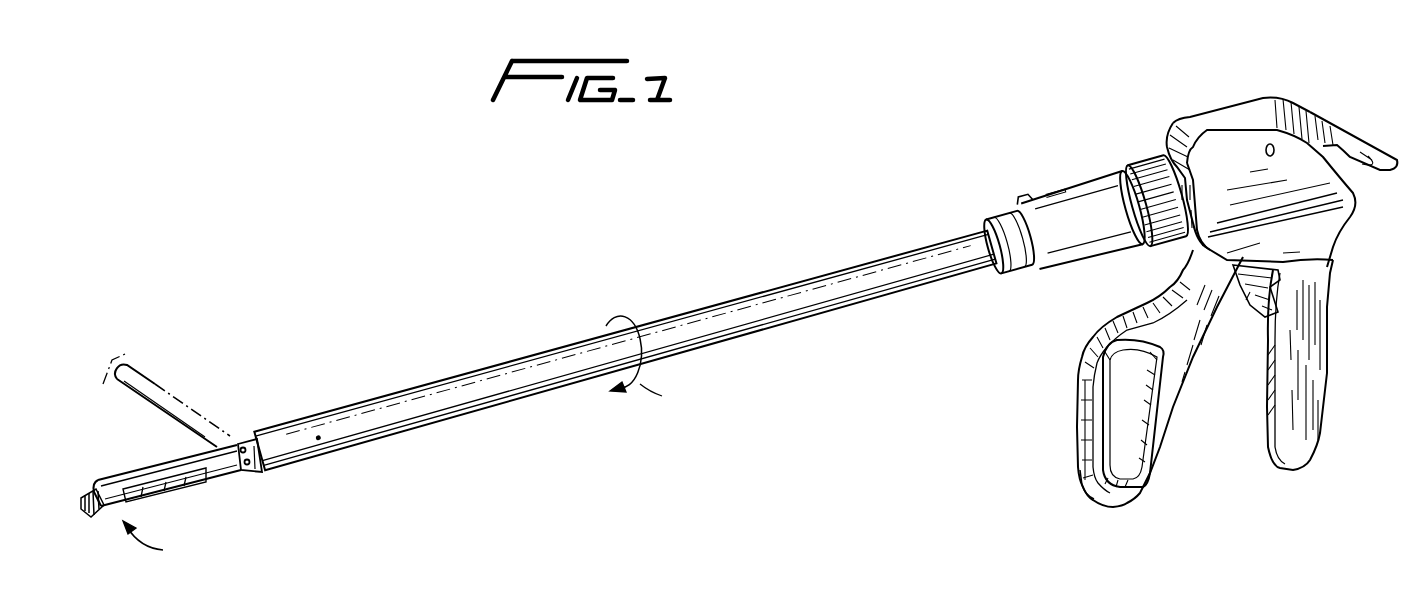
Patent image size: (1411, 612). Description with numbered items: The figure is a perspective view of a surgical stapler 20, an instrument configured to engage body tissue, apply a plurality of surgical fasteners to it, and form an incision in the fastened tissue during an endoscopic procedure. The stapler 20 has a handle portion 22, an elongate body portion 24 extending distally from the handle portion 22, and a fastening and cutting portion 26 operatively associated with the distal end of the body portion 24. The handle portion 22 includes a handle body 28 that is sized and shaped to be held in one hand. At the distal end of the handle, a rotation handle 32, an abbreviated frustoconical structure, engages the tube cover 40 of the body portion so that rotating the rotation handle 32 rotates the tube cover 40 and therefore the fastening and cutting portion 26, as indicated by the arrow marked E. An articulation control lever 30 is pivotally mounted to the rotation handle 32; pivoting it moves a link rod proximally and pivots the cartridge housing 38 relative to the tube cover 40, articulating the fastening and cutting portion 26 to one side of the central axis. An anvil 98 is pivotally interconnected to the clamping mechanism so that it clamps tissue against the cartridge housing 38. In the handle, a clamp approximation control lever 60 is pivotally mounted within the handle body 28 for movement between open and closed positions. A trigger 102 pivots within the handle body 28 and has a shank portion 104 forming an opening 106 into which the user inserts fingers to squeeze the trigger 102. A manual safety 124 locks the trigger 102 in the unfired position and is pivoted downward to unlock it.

The surgical stapler 20 is at (863, 404).
The handle portion 22 is at (1176, 111).
The elongate body portion 24 is at (740, 292).
The fastening and cutting portion 26 is at (214, 495).
The handle body 28 is at (1335, 253).
The articulation control lever 30 is at (1018, 199).
The rotation handle 32 is at (1142, 164).
The cartridge housing 38 is at (160, 505).
The tube cover 40 is at (897, 281).
The clamp approximation control lever 60 is at (1308, 110).
The anvil 98 is at (143, 462).
The trigger 102 is at (1084, 494).
The shank portion 104 is at (1173, 403).
The opening 106 is at (1120, 450).
The manual safety 124 is at (1247, 313).